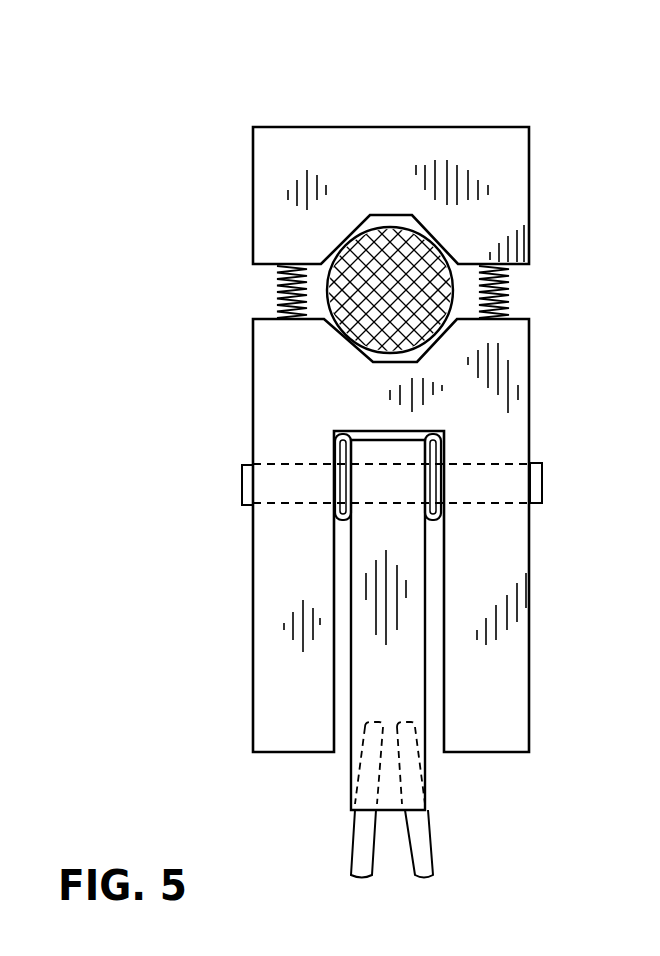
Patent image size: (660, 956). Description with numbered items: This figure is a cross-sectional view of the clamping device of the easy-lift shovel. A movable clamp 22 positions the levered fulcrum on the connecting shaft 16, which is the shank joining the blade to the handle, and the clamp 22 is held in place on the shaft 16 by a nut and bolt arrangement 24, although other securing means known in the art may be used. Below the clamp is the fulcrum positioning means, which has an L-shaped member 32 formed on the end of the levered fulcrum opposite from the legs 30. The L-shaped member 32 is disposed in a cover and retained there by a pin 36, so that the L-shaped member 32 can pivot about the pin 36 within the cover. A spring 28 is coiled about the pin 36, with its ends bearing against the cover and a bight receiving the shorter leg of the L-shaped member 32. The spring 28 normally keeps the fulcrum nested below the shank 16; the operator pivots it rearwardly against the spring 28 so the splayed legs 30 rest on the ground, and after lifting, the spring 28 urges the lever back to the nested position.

The connecting shaft 16 is at (435, 240).
The movable clamp 22 is at (409, 127).
The nut and bolt arrangement 24 is at (277, 295).
The spring 28 is at (443, 435).
The legs 30 is at (350, 863).
The L-shaped member 32 is at (257, 626).
The pin 36 is at (242, 478).